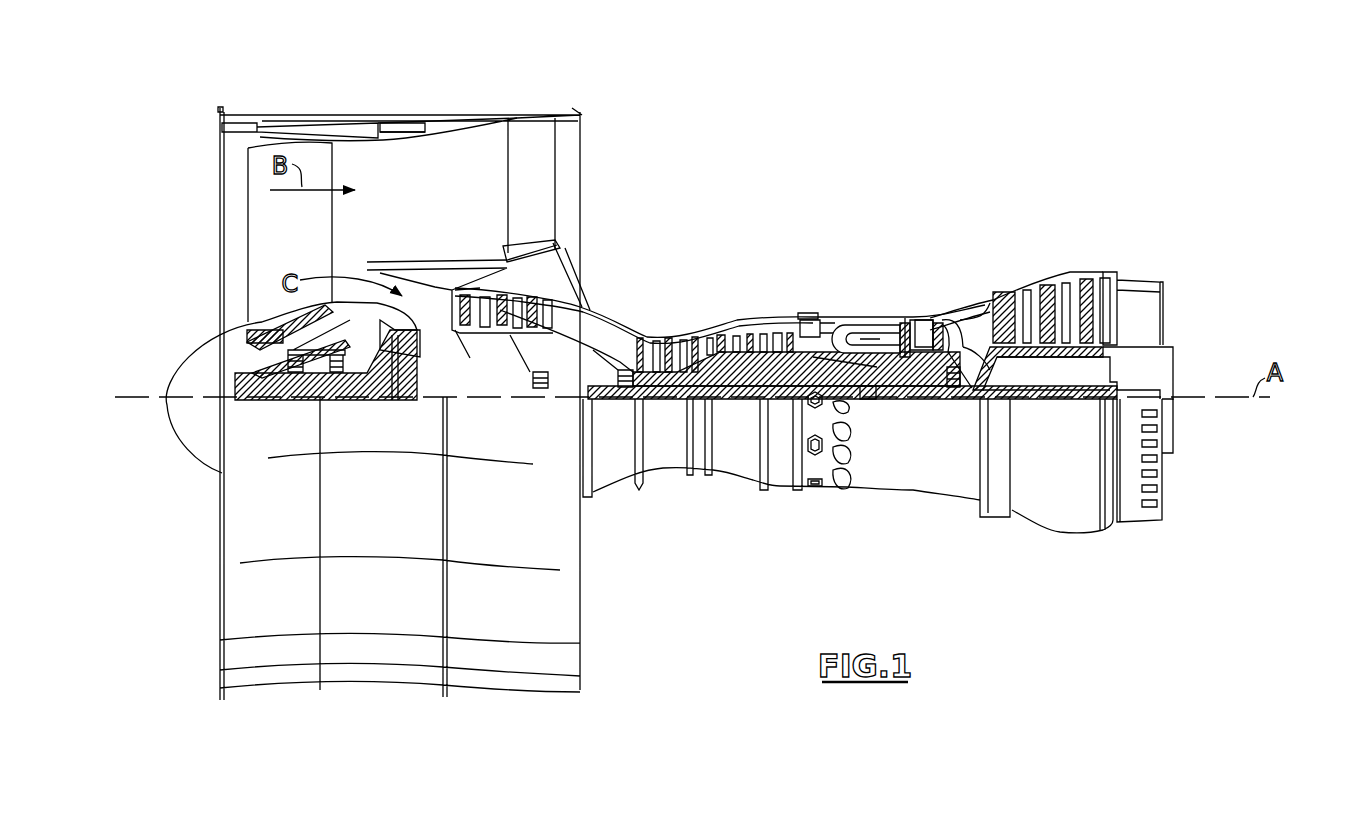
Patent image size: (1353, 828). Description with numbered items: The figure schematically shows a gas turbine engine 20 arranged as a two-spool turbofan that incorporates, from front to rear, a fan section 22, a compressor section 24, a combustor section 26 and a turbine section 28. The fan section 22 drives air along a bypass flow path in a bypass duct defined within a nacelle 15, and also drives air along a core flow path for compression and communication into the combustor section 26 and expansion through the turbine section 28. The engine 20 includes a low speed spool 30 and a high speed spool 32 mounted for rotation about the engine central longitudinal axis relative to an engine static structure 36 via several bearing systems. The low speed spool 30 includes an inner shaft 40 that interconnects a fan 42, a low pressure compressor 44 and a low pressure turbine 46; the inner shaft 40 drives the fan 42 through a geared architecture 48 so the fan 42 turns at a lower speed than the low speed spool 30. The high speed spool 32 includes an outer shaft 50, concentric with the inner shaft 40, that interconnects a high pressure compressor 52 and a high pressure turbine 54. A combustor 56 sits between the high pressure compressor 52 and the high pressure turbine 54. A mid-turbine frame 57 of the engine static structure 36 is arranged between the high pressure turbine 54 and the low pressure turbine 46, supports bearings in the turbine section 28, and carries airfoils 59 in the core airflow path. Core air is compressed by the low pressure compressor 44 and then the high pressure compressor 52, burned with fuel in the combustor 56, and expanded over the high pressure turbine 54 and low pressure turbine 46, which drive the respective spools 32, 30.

The nacelle 15 is at (402, 117).
The gas turbine engine 20 is at (862, 168).
The fan section 22 is at (332, 104).
The compressor section 24 is at (633, 305).
The combustor section 26 is at (856, 297).
The turbine section 28 is at (1004, 257).
The low speed spool 30 is at (742, 408).
The high speed spool 32 is at (783, 330).
The engine static structure 36 is at (780, 492).
The inner shaft 40 is at (605, 401).
The fan 42 is at (275, 246).
The low pressure compressor 44 is at (507, 307).
The low pressure turbine 46 is at (1047, 285).
The geared architecture 48 is at (405, 393).
The outer shaft 50 is at (868, 397).
The high pressure compressor 52 is at (707, 338).
The high pressure turbine 54 is at (923, 320).
The combustor 56 is at (858, 338).
The mid-turbine frame 57 is at (963, 311).
The airfoils 59 is at (1000, 365).